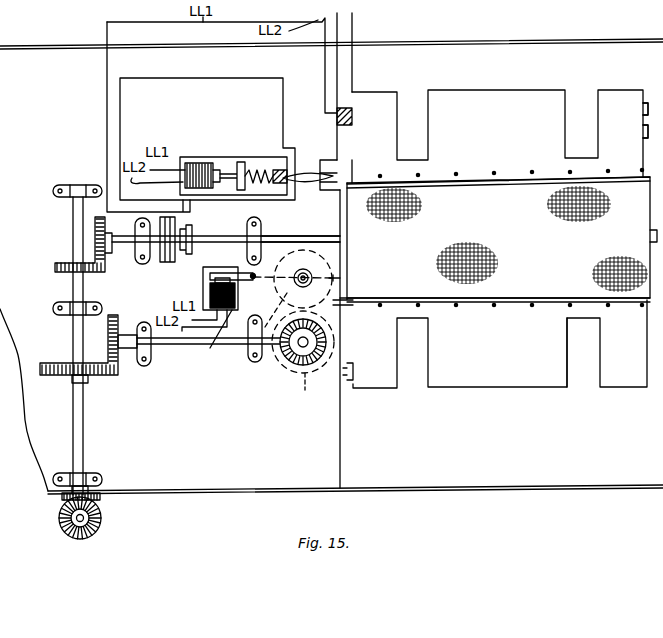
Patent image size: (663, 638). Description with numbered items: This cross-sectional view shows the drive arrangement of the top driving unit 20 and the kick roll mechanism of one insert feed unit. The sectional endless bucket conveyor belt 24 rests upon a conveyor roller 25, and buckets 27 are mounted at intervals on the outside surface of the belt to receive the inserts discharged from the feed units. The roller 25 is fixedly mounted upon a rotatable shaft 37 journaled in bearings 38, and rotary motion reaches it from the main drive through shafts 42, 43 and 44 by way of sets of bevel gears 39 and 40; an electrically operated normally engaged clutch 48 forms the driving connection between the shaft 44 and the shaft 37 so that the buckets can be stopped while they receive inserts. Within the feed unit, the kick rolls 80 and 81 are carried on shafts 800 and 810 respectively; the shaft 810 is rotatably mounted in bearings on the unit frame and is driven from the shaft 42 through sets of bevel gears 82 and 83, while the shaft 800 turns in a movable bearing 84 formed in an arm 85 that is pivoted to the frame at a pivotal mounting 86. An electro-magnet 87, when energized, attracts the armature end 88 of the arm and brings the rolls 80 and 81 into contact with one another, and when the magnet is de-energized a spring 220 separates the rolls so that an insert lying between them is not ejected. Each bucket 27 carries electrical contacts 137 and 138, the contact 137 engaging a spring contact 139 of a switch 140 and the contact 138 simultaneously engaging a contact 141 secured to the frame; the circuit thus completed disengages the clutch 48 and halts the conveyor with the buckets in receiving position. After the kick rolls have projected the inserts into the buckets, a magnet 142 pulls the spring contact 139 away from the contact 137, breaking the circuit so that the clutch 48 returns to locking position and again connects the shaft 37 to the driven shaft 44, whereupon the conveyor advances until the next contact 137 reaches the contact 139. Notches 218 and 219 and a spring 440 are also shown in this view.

The top driving unit 20 is at (328, 422).
The sectional endless bucket conveyor belt 24 is at (593, 273).
The conveyor roller 25 is at (535, 285).
The bucket 27 is at (493, 118).
The rotatable shaft 37 is at (297, 238).
The bearings 38 is at (260, 222).
The bevel gears 39 is at (97, 229).
The bevel gears 40 is at (100, 506).
The shaft 42 is at (75, 341).
The shaft 43 is at (80, 522).
The shaft 44 is at (123, 248).
The electrically operated normally engaged clutch 48 is at (167, 260).
The kick roll 80 is at (248, 352).
The kick roll 81 is at (306, 390).
The bevel gears 82 is at (292, 358).
The bevel gears 83 is at (108, 362).
The movable bearing 84 is at (307, 270).
The arm 85 is at (256, 280).
The pivotal mounting 86 is at (336, 278).
The electro-magnet 87 is at (210, 348).
The armature end 88 is at (212, 280).
The electrical contact 137 is at (345, 167).
The electrical contact 138 is at (348, 108).
The spring contact 139 is at (323, 168).
The switch 140 is at (241, 162).
The contact 141 is at (343, 80).
The magnet 142 is at (200, 163).
The notch 218 is at (643, 90).
The notch 219 is at (643, 133).
The spring 220 is at (250, 273).
The spring 440 is at (260, 170).
The shaft 800 is at (310, 274).
The shaft 810 is at (303, 347).